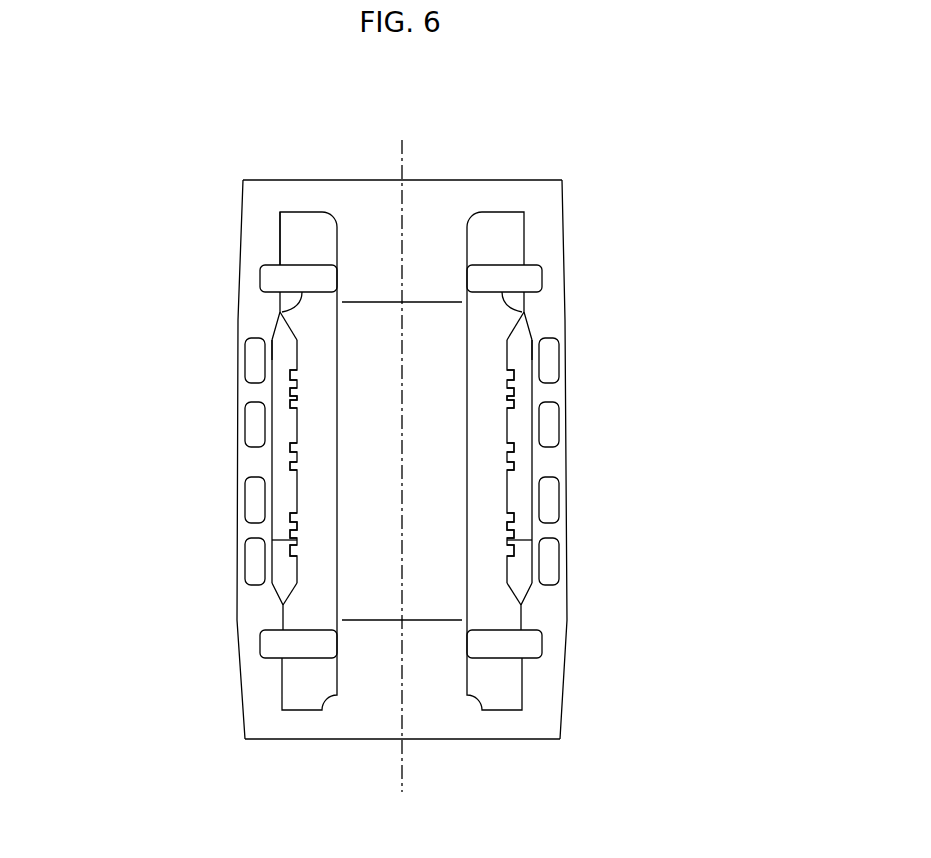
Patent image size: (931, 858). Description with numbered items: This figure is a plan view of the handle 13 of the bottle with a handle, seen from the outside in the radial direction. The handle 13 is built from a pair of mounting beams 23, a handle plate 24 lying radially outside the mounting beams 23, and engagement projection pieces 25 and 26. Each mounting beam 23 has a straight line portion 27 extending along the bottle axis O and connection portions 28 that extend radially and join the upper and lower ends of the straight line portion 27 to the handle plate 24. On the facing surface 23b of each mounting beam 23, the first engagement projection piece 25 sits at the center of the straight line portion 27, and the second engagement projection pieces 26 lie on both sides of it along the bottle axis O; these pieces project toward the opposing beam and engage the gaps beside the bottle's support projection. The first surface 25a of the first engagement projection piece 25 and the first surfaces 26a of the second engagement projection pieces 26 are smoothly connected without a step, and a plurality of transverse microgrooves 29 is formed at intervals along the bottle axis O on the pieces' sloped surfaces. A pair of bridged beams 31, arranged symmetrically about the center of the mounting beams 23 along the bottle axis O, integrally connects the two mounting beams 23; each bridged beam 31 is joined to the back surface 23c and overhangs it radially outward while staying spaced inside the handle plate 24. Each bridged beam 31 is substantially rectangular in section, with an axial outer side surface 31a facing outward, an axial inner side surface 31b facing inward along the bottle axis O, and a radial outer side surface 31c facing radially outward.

The handle 13 is at (638, 132).
The mounting beam 23 is at (104, 230).
The facing surface 23b is at (275, 343).
The back surface 23c is at (252, 643).
The handle plate 24 is at (474, 472).
The first engagement projection piece 25 is at (306, 455).
The first surface of the first engagement projection piece 25a is at (297, 463).
The second engagement projection piece 26 is at (307, 382).
The first surface of the second engagement projection piece 26a is at (283, 537).
The straight line portion 27 is at (236, 413).
The connection portion 28 is at (238, 226).
The transverse microgrooves 29 is at (297, 405).
The bridged beam 31 is at (492, 255).
The axial outer side surface 31a is at (317, 265).
The axial inner side surface 31b is at (282, 312).
The radial outer side surface 31c is at (295, 270).
The bottle axis O is at (404, 152).